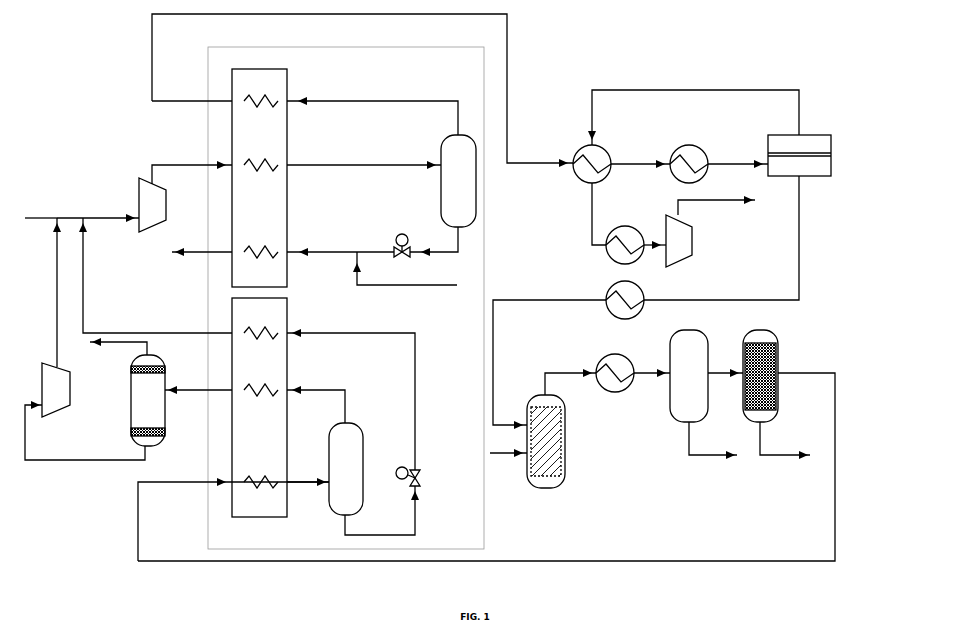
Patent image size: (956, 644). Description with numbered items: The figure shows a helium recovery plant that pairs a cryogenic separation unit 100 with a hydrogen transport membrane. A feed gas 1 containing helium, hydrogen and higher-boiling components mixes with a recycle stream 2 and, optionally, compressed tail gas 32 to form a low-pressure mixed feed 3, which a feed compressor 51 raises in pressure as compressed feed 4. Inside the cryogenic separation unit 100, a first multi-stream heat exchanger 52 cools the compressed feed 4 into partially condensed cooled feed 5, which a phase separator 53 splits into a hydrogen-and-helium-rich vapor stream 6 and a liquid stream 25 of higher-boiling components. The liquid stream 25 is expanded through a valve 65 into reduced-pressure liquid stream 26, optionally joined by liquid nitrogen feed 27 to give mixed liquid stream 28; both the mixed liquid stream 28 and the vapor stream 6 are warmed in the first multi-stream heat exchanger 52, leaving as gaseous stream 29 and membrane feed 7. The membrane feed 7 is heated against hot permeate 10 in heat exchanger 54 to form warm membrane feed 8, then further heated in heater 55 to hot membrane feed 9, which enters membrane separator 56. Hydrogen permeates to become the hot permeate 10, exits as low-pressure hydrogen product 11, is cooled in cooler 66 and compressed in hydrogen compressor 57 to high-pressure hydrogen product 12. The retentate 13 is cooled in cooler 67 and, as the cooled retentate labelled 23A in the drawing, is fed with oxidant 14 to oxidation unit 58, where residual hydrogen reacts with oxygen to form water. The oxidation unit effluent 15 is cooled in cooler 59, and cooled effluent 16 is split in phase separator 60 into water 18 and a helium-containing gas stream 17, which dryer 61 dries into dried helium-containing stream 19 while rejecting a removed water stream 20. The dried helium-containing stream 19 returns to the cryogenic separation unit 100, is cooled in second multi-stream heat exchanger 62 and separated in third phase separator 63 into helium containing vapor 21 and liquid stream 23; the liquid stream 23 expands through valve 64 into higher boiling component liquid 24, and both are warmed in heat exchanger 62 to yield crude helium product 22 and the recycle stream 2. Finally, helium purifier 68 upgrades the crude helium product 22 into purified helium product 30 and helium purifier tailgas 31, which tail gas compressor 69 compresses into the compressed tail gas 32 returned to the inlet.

The feed gas 1 is at (41, 210).
The recycle stream 2 is at (155, 275).
The low-pressure mixed feed 3 is at (98, 212).
The compressed feed 4 is at (192, 166).
The partially condensed cooled feed 5 is at (364, 159).
The vapor stream 6 is at (305, 111).
The membrane feed 7 is at (362, 90).
The warm membrane feed 8 is at (640, 159).
The hot membrane feed 9 is at (738, 159).
The hot permeate 10 is at (693, 111).
The low-pressure hydrogen product 11 is at (629, 216).
The high-pressure hydrogen product 12 is at (716, 205).
The retentate 13 is at (721, 238).
The oxidant 14 is at (508, 458).
The oxidation unit effluent 15 is at (570, 382).
The cooled effluent 16 is at (652, 379).
The gas stream 17 is at (725, 379).
The water 18 is at (713, 446).
The dried helium-containing stream 19 is at (486, 467).
The removed water stream 20 is at (785, 446).
The helium containing vapor 21 is at (316, 400).
The crude helium product 22 is at (198, 386).
The liquid stream 23 is at (382, 510).
The cooled product stream 23A is at (549, 364).
The higher boiling component liquid 24 is at (351, 395).
The liquid stream 25 is at (202, 248).
The reduced-pressure liquid stream 26 is at (407, 241).
The liquid nitrogen feed 27 is at (322, 248).
The mixed liquid stream 28 is at (405, 268).
The gaseous stream 29 is at (233, 519).
The purified helium product 30 is at (118, 347).
The helium purifier tailgas 31 is at (85, 430).
The compressed tail gas 32 is at (51, 292).
The feed compressor 51 is at (152, 205).
The first multi-stream heat exchanger 52 is at (259, 178).
The phase separator 53 is at (458, 181).
The heat exchanger 54 is at (585, 168).
The heater 55 is at (402, 252).
The membrane separator 56 is at (685, 168).
The hydrogen compressor 57 is at (679, 241).
The oxidation unit 58 is at (799, 155).
The cooler 59 is at (611, 379).
The phase separator 60 is at (622, 250).
The dryer 61 is at (546, 441).
The second multi-stream heat exchanger 62 is at (259, 407).
The third phase separator 63 is at (760, 376).
The valve 64 is at (346, 469).
The valve 65 is at (417, 476).
The cooler 66 is at (689, 376).
The cooler 67 is at (622, 305).
The helium purifier 68 is at (148, 400).
The tail gas compressor 69 is at (56, 390).
The cryogenic separation unit 100 is at (346, 298).